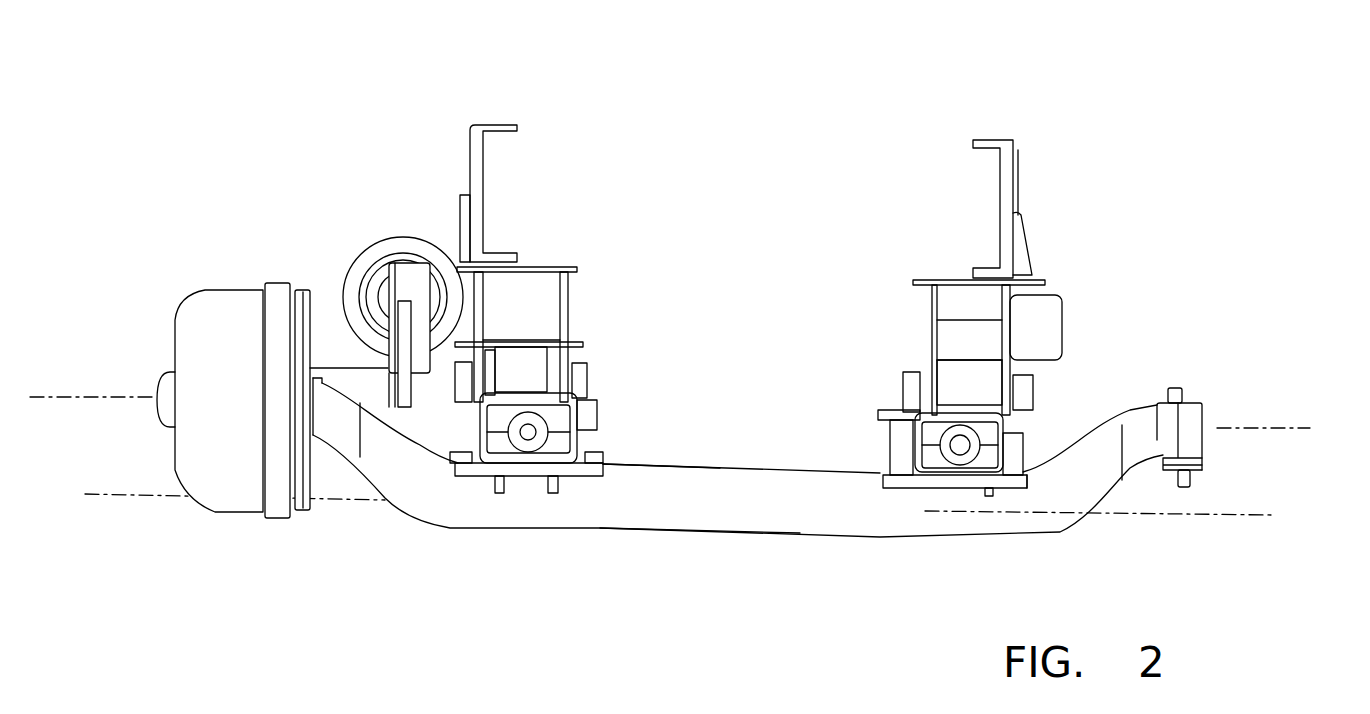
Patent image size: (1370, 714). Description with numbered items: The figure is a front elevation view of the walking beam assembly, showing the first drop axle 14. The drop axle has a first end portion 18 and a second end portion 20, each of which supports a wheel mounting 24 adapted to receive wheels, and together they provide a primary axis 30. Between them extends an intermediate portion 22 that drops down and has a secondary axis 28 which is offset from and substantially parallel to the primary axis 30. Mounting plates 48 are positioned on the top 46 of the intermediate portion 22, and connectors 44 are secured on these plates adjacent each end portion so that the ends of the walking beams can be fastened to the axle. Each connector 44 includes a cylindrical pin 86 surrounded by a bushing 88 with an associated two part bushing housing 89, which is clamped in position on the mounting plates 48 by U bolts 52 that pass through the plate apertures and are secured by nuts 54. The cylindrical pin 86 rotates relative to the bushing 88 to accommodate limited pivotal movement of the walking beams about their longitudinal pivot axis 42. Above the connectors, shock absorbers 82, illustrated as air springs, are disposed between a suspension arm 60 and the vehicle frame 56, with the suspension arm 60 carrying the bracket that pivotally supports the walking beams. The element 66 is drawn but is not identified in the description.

The first drop axle 14 is at (695, 532).
The first end portion 18 is at (1162, 462).
The second end portion 20 is at (320, 423).
The intermediate portion 22 is at (783, 513).
The wheel mounting 24 is at (230, 512).
The secondary axis 28 is at (703, 516).
The primary axis 30 is at (693, 421).
The longitudinal pivot axis 42 is at (528, 432).
The connector 44 is at (751, 331).
The top 46 is at (720, 468).
The mounting plate 48 is at (453, 465).
The U bolt 52 is at (560, 375).
The nut 54 is at (1018, 532).
The vehicle frame 56 is at (487, 125).
The suspension arm 60 is at (507, 358).
The side block 66 is at (587, 378).
The shock absorber 82 is at (547, 305).
The cylindrical pin 86 is at (555, 450).
The bushing 88 is at (472, 468).
The two part bushing housing 89 is at (890, 423).